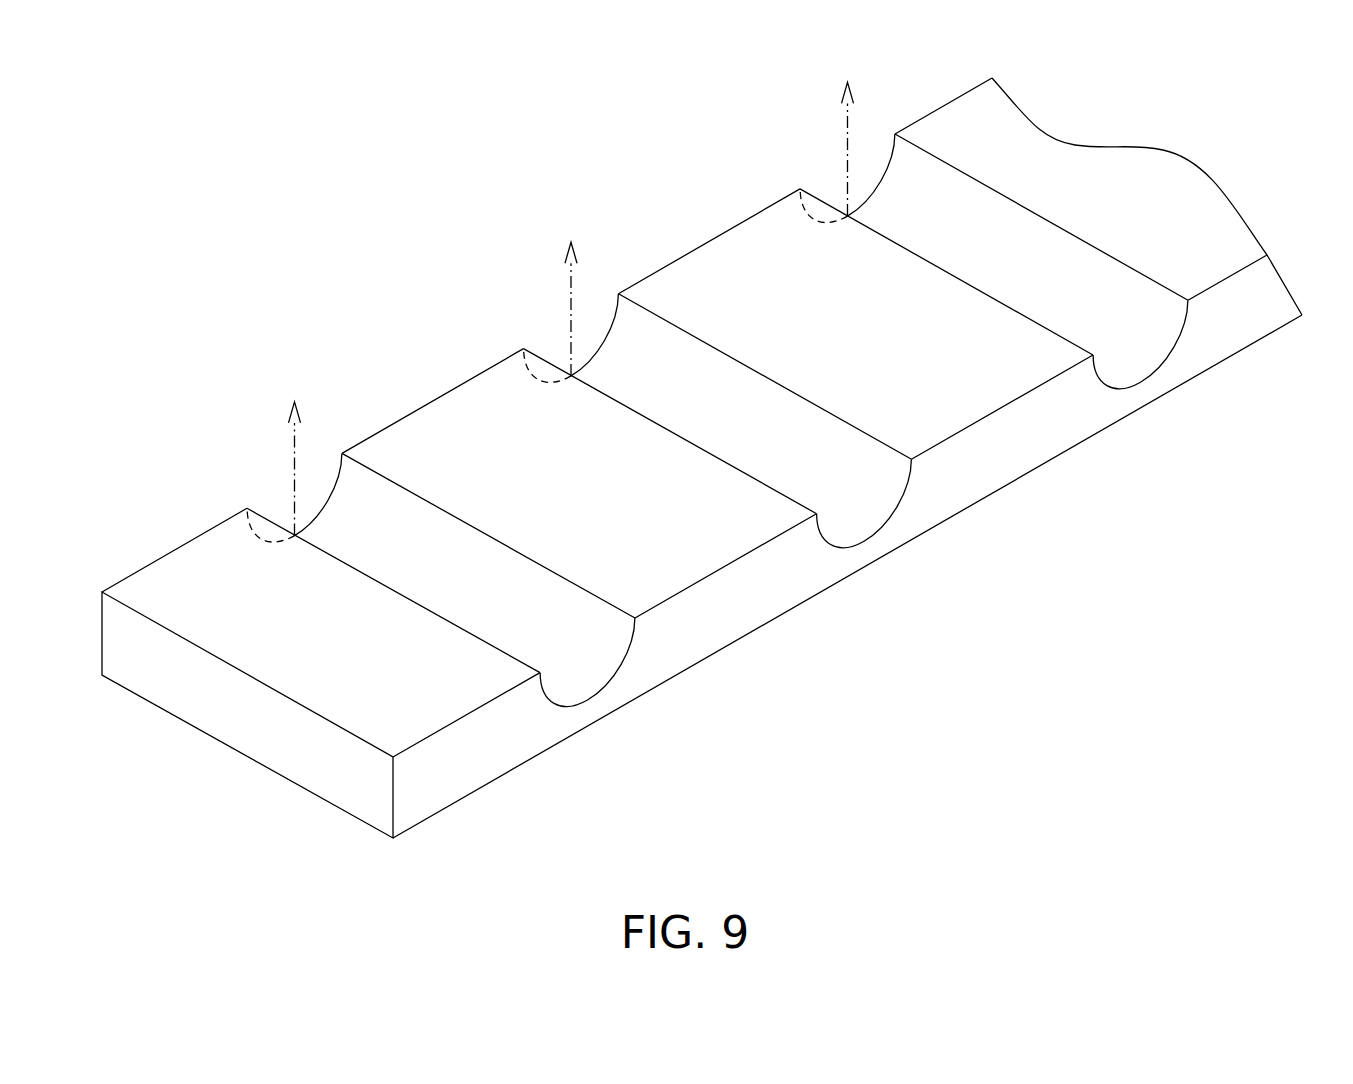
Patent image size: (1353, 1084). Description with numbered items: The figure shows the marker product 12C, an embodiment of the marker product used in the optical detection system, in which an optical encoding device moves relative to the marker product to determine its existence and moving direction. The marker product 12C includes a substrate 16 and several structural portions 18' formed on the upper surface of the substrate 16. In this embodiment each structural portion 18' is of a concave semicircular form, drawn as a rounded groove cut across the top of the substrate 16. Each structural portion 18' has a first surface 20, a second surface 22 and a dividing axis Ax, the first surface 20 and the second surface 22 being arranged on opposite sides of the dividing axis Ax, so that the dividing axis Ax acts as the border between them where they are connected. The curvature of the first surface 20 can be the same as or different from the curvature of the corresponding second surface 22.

The marker product 12C is at (702, 457).
The substrate 16 is at (498, 742).
The structural portion 18' is at (726, 469).
The first surface 20 is at (252, 524).
The second surface 22 is at (337, 477).
The dividing axis Ax is at (571, 291).